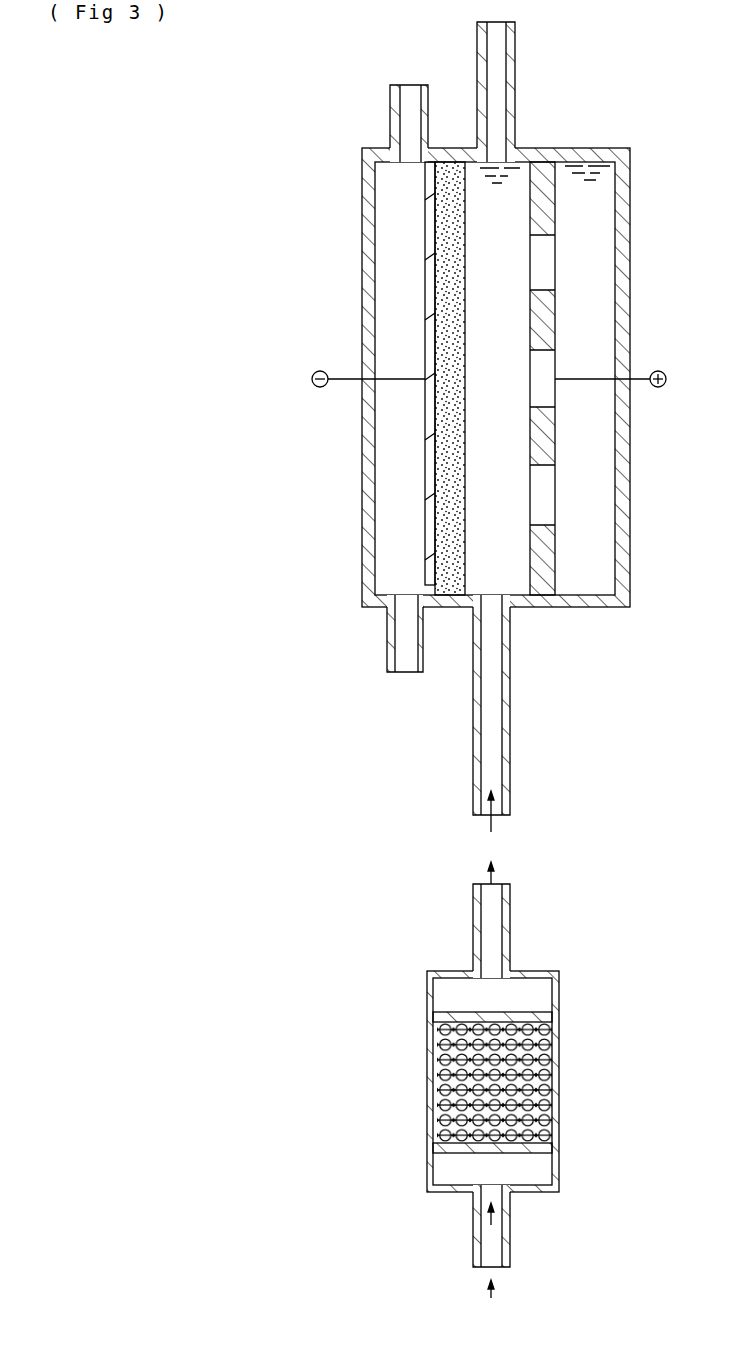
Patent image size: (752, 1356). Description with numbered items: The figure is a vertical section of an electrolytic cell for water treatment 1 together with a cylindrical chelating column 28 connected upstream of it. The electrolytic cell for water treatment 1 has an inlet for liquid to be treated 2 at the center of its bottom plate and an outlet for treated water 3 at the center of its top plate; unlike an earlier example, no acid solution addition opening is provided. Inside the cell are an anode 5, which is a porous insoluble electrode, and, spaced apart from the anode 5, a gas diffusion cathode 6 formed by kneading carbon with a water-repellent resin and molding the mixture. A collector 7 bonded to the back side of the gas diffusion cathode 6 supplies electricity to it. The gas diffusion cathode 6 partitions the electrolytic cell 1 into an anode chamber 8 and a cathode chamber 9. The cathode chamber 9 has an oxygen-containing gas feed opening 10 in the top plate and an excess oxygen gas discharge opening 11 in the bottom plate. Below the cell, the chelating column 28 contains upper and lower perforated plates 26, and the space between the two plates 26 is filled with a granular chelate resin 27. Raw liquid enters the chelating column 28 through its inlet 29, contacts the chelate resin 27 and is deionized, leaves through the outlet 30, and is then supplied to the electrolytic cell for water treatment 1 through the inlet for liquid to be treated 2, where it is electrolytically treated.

The electrolytic cell for water treatment 1 is at (335, 212).
The inlet for liquid to be treated 2 is at (473, 670).
The outlet for treated water 3 is at (515, 60).
The anode 5 is at (548, 303).
The gas diffusion cathode 6 is at (437, 247).
The collector 7 is at (428, 437).
The anode chamber 8 is at (600, 530).
The cathode chamber 9 is at (390, 508).
The oxygen-containing gas feed opening 10 is at (392, 110).
The excess oxygen gas discharge opening 11 is at (388, 636).
The perforated plates 26 is at (518, 1016).
The granular chelate resin 27 is at (440, 1090).
The chelating column 28 is at (565, 1045).
The inlet 29 is at (473, 1240).
The outlet 30 is at (510, 905).